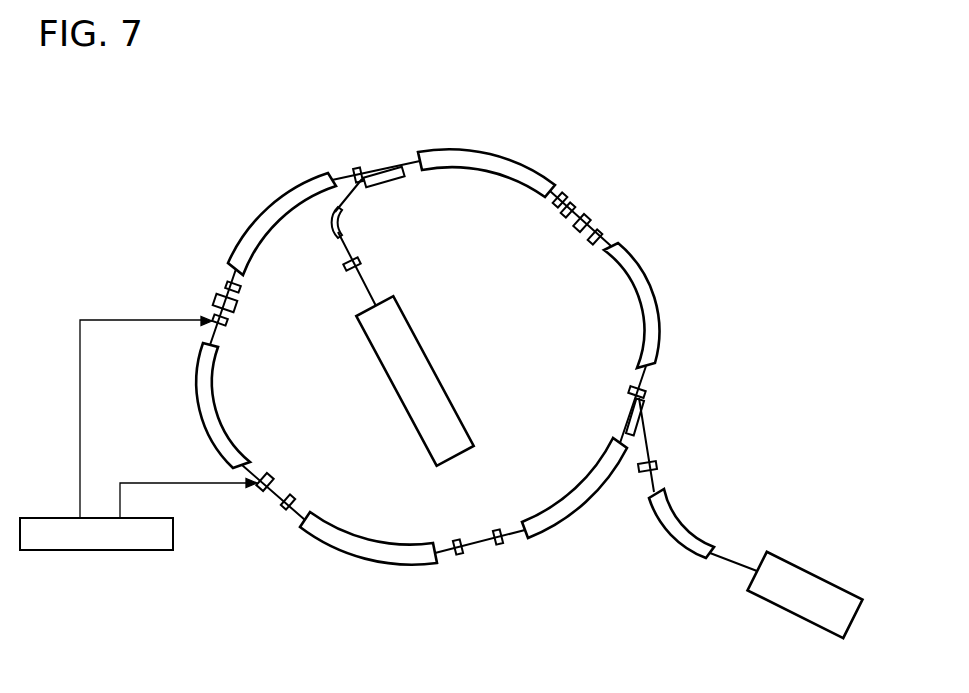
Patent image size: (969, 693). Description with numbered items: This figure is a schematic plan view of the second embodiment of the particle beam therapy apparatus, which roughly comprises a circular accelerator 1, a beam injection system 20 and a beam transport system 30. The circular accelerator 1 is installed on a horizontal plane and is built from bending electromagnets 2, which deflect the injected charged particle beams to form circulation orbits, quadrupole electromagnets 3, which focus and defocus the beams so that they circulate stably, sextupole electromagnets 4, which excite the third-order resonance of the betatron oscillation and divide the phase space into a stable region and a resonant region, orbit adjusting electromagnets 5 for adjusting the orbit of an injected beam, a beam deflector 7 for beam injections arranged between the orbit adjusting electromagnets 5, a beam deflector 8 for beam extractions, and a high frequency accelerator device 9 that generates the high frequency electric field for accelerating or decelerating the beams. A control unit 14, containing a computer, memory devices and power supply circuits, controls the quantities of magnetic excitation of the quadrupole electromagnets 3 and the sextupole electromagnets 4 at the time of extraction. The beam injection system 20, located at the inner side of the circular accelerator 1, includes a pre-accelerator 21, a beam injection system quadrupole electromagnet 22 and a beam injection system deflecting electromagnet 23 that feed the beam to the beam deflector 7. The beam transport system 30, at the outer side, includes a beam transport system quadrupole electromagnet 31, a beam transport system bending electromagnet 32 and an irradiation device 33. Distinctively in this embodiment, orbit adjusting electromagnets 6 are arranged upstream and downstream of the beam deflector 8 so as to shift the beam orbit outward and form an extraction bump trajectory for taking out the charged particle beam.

The circular accelerator 1 is at (256, 198).
The bending electromagnet 2 is at (322, 530).
The quadrupole electromagnet 3 is at (359, 167).
The sextupole electromagnet 4 is at (586, 221).
The orbit adjusting electromagnet 5 is at (562, 198).
The orbit adjusting electromagnet 6 is at (598, 236).
The beam deflector for beam injections 7 is at (392, 168).
The beam deflector for beam extractions 8 is at (645, 418).
The high frequency accelerator device 9 is at (216, 303).
The control unit 14 is at (62, 518).
The beam injection system 20 is at (340, 320).
The pre-accelerator 21 is at (437, 382).
The beam injection system quadrupole electromagnet 22 is at (361, 262).
The beam injection system deflecting electromagnet 23 is at (342, 222).
The beam transport system 30 is at (669, 538).
The beam transport system quadrupole electromagnet 31 is at (658, 466).
The beam transport system bending electromagnet 32 is at (690, 515).
The irradiation device 33 is at (805, 574).